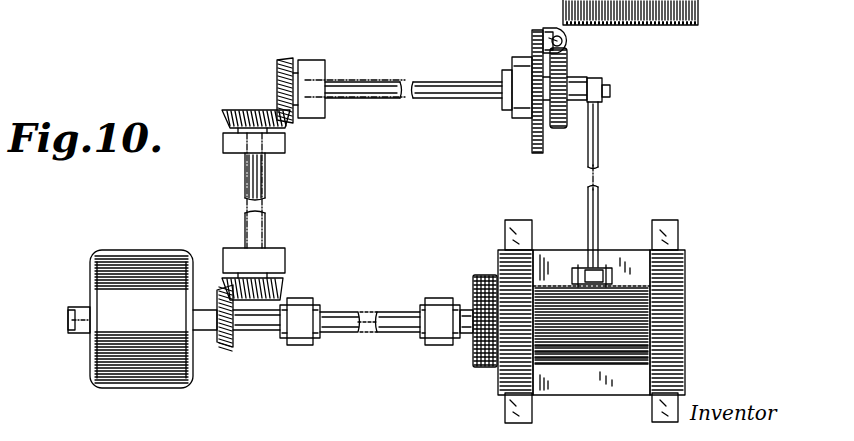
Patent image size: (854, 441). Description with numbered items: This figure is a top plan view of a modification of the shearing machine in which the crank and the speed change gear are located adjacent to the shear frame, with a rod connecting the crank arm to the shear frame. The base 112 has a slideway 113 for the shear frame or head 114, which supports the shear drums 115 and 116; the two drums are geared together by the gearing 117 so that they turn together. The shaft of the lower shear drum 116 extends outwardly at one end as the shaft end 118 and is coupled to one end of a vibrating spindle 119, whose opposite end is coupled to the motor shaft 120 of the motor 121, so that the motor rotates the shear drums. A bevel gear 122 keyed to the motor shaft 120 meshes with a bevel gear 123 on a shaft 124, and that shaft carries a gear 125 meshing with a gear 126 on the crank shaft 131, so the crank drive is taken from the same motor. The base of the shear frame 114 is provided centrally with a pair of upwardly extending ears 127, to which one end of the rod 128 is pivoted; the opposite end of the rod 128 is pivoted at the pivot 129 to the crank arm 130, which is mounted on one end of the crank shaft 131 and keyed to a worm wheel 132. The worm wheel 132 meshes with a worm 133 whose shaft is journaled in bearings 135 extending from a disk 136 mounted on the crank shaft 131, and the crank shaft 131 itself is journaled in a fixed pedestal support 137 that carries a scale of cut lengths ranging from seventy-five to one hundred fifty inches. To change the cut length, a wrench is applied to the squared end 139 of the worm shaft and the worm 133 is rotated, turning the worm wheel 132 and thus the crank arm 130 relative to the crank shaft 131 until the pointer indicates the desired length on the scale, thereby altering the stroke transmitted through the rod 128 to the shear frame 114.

The base 112 is at (680, 240).
The slideway 113 is at (505, 407).
The shear frame 114 is at (680, 297).
The shear drum 115 is at (640, 318).
The lower shear drum 116 is at (667, 353).
The gearing 117 is at (478, 278).
The outwardly extending shaft end 118 is at (465, 335).
The vibrating spindle 119 is at (352, 330).
The motor shaft 120 is at (260, 328).
The motor 121 is at (150, 390).
The bevel gear 122 is at (227, 347).
The bevel gear 123 is at (283, 288).
The shaft 124 is at (248, 215).
The gear 125 is at (230, 110).
The gear 126 is at (287, 56).
The ears 127 is at (603, 263).
The rod 128 is at (598, 162).
The pivot 129 is at (610, 92).
The crank arm 130 is at (587, 74).
The crank shaft 131 is at (392, 99).
The worm wheel 132 is at (557, 130).
The worm 133 is at (556, 38).
The bearings 135 is at (543, 36).
The disk 136 is at (532, 142).
The fixed pedestal support 137 is at (510, 110).
The squared end 139 is at (545, 42).